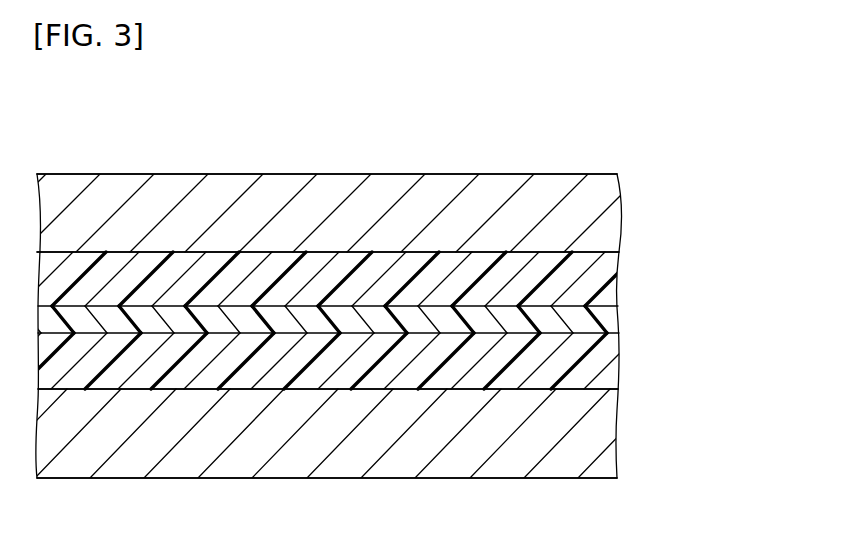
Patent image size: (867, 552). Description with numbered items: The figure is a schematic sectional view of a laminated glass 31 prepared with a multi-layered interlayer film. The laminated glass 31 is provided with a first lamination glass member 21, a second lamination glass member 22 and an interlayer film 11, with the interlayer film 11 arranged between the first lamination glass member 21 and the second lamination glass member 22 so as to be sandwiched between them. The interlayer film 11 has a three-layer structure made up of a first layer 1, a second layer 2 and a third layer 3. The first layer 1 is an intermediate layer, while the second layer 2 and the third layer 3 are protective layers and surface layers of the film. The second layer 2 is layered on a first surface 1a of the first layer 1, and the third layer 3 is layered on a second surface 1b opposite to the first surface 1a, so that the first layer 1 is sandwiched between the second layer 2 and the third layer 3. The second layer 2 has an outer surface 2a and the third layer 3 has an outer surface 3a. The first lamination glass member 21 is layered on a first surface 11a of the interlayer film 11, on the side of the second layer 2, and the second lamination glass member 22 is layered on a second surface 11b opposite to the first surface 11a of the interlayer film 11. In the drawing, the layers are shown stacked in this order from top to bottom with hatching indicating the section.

The laminated glass 31 is at (163, 140).
The second lamination glass member 22 is at (620, 207).
The first lamination glass member 21 is at (620, 420).
The interlayer film 11 is at (252, 251).
The first surface 11a is at (340, 389).
The second surface 11b is at (340, 252).
The third layer 3 is at (619, 280).
The outer surface 3a is at (543, 252).
The first layer 1 is at (619, 322).
The first surface 1a is at (422, 333).
The second surface 1b is at (422, 306).
The second layer 2 is at (619, 363).
The outer surface 2a is at (537, 389).